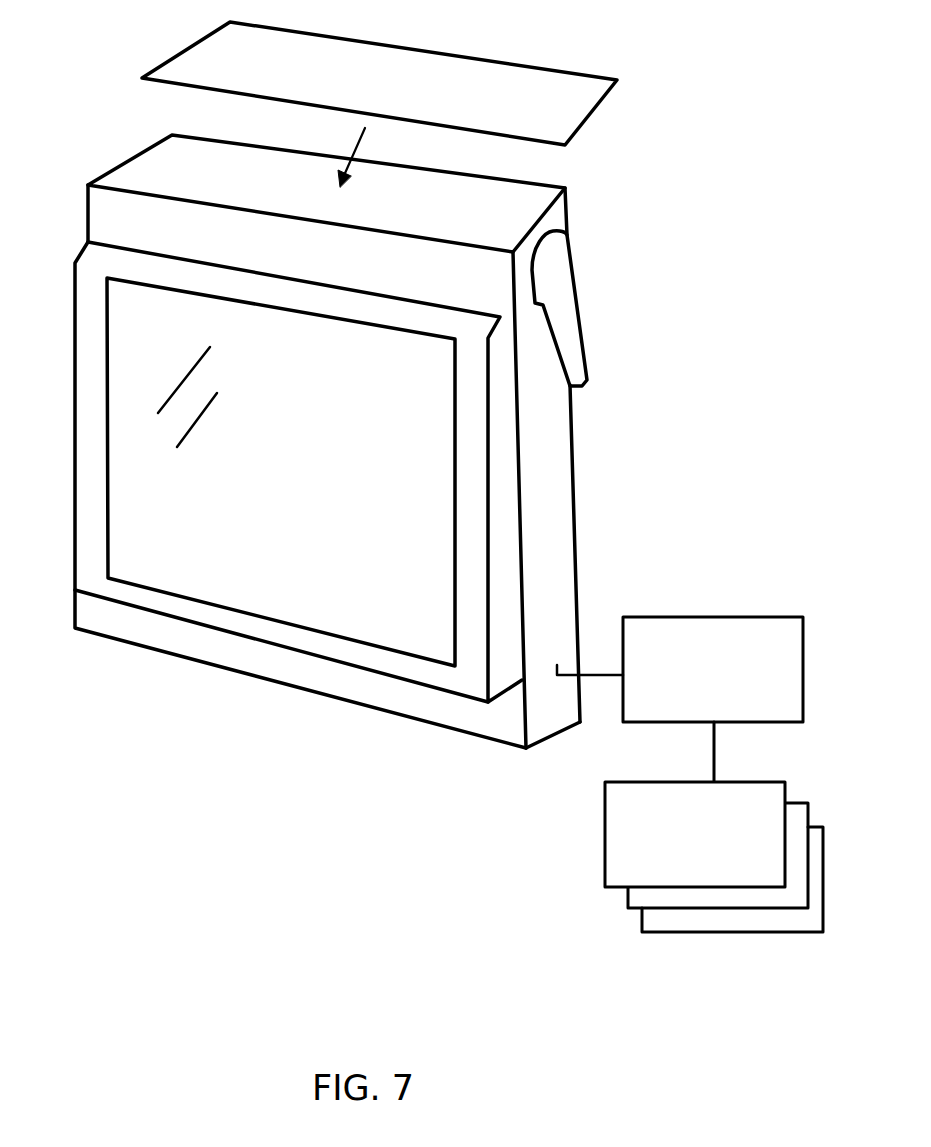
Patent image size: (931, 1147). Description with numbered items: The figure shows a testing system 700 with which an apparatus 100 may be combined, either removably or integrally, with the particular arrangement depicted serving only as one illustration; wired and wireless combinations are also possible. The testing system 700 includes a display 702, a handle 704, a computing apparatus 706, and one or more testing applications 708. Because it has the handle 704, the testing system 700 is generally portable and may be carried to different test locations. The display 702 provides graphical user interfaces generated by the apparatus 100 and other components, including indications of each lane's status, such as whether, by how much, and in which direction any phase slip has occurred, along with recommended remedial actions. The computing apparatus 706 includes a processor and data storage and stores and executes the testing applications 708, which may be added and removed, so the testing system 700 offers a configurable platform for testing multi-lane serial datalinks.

The apparatus 100 is at (617, 132).
The testing system 700 is at (600, 490).
The display 702 is at (368, 548).
The handle 704 is at (600, 315).
The computing apparatus 706 is at (693, 711).
The testing applications 708 is at (675, 876).